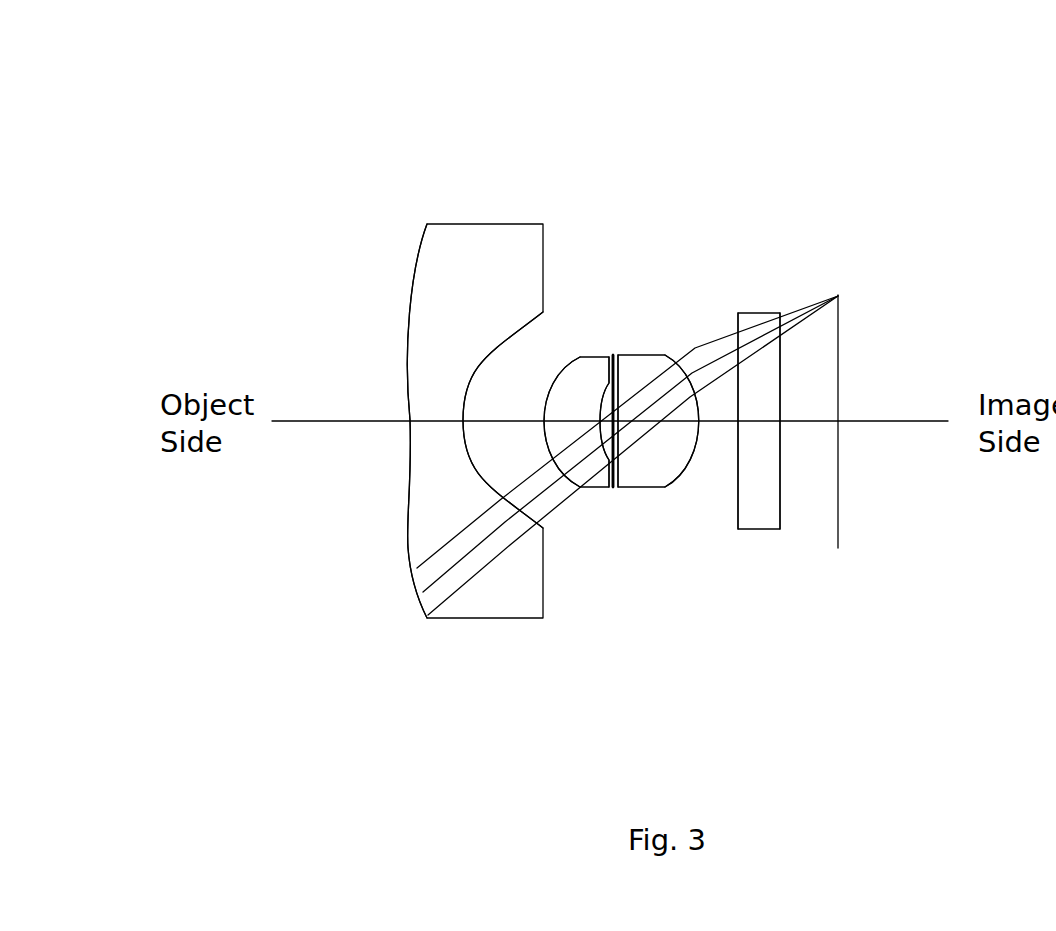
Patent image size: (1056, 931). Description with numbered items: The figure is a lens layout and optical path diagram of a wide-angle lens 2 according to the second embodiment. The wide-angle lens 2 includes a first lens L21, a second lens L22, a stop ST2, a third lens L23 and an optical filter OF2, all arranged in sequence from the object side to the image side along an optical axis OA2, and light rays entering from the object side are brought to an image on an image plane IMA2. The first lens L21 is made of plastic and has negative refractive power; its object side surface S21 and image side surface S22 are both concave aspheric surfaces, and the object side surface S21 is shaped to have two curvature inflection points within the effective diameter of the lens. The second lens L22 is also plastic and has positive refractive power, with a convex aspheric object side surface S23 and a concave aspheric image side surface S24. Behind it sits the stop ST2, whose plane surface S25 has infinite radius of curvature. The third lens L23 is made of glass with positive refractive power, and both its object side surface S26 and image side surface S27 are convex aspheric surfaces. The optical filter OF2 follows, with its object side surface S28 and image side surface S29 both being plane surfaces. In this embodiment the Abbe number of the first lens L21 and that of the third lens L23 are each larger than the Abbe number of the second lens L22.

The wide-angle lens 2 is at (210, 57).
The optical axis OA2 is at (357, 422).
The first lens L21 is at (468, 224).
The second lens L22 is at (588, 357).
The stop ST2 is at (613, 355).
The third lens L23 is at (640, 355).
The optical filter OF2 is at (758, 313).
The image plane IMA2 is at (840, 295).
The object side surface of first lens S21 is at (408, 547).
The image side surface of first lens S22 is at (500, 500).
The object side surface of second lens S23 is at (568, 470).
The image side surface of second lens S24 is at (597, 487).
The stop surface S25 is at (615, 487).
The object side surface of third lens S26 is at (645, 487).
The image side surface of third lens S27 is at (682, 475).
The object side surface of optical filter S28 is at (738, 505).
The image side surface of optical filter S29 is at (780, 518).